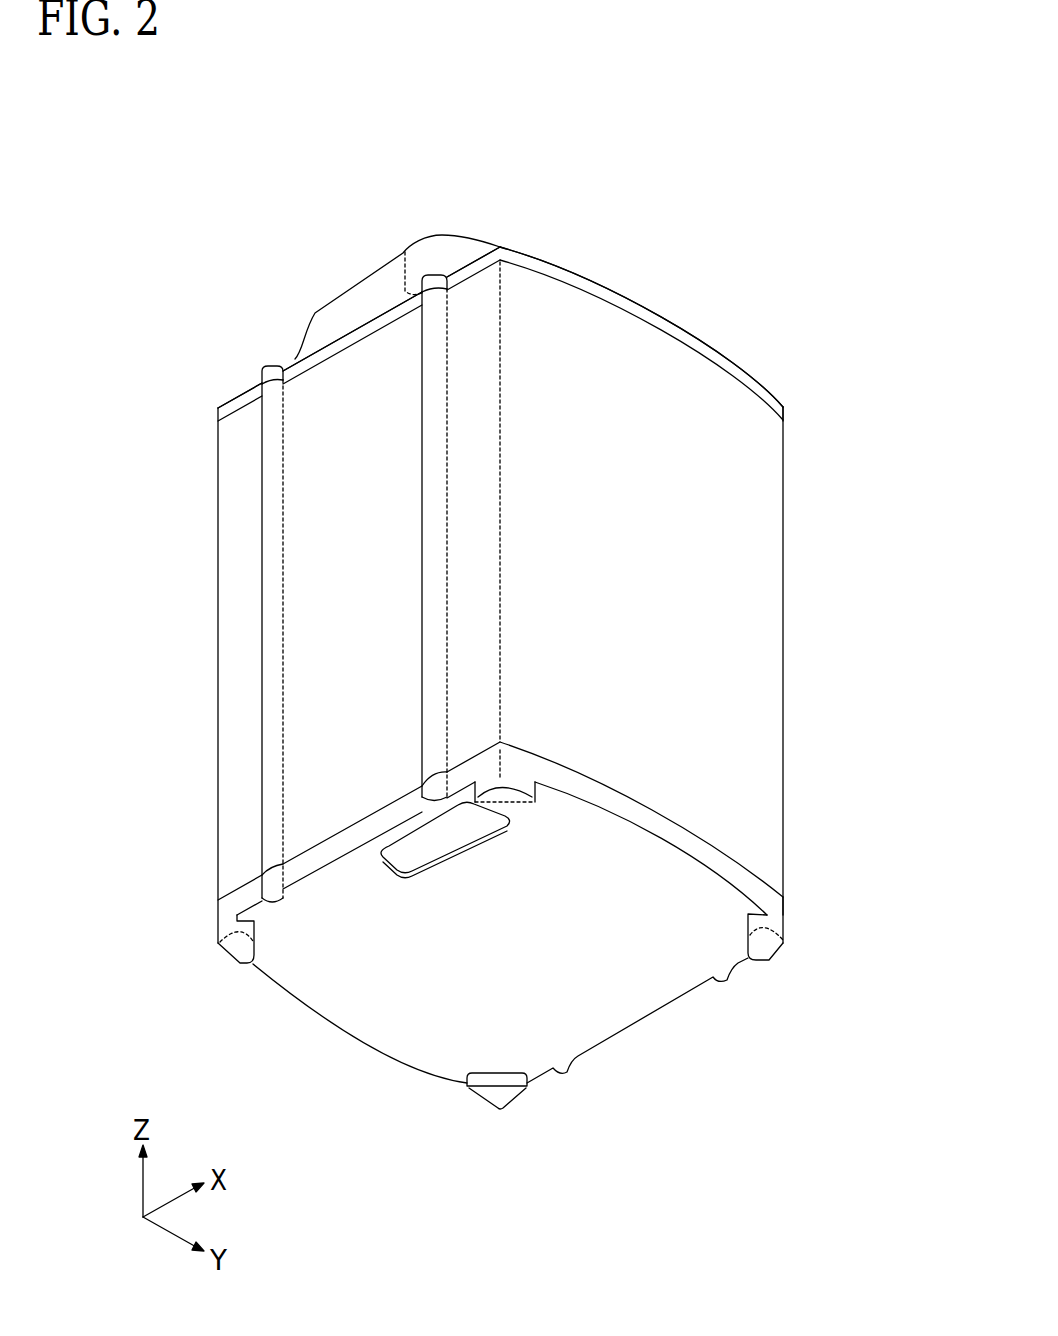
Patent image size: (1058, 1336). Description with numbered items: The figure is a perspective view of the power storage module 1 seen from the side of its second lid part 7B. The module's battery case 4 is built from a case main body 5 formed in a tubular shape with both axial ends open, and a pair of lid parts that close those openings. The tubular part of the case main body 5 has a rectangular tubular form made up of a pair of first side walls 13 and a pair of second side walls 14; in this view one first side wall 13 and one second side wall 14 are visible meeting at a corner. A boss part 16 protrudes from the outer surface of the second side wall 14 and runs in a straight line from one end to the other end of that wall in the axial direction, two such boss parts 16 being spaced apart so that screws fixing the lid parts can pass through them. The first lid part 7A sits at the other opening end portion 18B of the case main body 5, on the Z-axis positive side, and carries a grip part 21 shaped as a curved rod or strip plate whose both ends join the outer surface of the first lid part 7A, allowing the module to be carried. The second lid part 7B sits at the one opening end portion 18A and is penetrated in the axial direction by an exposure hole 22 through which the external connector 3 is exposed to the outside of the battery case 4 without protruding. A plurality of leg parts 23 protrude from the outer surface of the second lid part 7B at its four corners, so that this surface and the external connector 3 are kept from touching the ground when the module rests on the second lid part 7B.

The power storage module 1 is at (231, 190).
The external connector 3 is at (443, 838).
The battery case 4 is at (227, 391).
The case main body 5 is at (786, 660).
The first lid part 7A is at (764, 382).
The second lid part 7B is at (652, 1017).
The first side wall 13 is at (727, 540).
The second side wall 14 is at (338, 583).
The boss part 16 is at (260, 502).
The one opening end portion 18A is at (786, 888).
The other opening end portion 18B is at (783, 424).
The grip part 21 is at (463, 236).
The exposure hole 22 is at (400, 878).
The leg part 23 is at (513, 798).